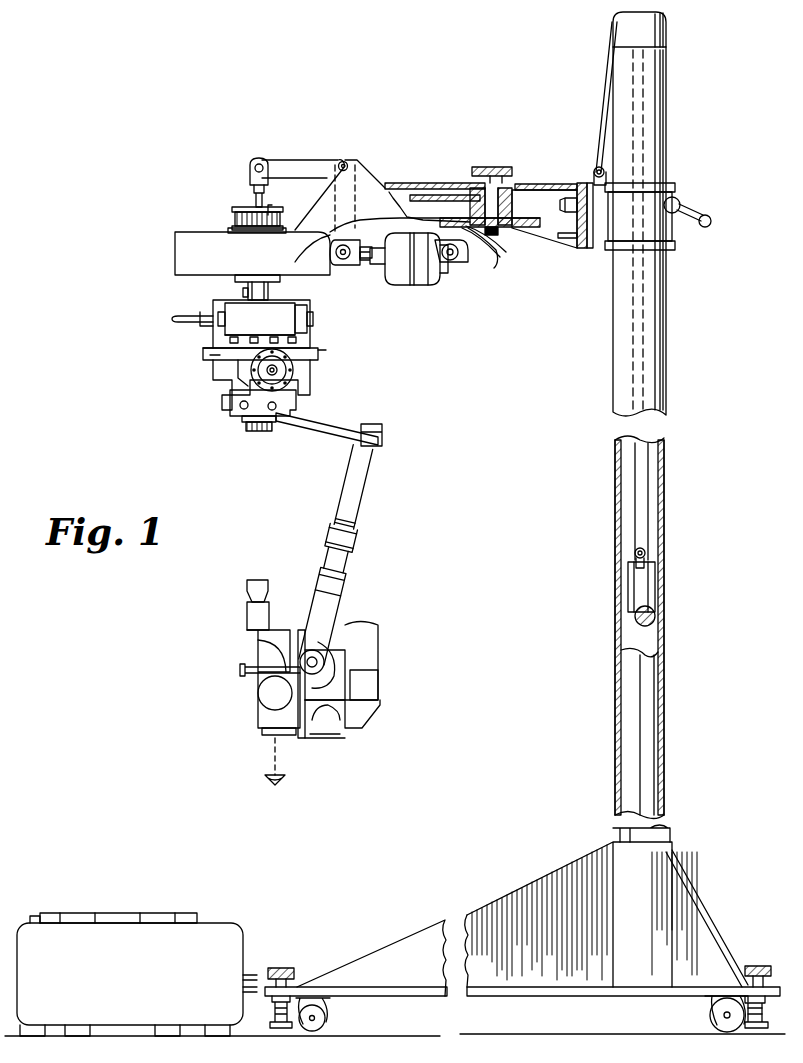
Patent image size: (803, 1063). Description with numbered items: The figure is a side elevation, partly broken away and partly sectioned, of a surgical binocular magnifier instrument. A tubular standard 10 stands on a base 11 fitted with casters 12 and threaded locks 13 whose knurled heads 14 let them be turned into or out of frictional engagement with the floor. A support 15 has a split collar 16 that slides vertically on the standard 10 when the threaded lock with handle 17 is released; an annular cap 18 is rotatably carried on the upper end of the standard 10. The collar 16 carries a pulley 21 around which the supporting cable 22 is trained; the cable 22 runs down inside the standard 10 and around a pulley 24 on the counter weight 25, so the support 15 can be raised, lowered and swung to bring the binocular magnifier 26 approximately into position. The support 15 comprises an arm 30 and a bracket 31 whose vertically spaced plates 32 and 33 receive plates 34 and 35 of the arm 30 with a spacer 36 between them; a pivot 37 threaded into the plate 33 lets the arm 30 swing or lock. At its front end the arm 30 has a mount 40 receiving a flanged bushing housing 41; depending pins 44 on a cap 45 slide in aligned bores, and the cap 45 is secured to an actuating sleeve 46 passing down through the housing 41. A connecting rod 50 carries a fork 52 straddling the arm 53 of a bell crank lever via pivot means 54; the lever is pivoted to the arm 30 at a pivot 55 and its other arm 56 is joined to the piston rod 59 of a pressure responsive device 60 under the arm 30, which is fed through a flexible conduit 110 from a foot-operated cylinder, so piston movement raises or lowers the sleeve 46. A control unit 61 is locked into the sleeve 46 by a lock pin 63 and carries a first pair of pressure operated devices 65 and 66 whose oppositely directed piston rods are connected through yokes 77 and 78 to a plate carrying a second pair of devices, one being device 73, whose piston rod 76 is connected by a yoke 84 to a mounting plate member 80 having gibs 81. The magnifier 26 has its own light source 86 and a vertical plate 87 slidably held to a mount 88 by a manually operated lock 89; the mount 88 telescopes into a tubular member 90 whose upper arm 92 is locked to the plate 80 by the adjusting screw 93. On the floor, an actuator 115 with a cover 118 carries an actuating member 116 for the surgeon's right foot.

The tubular standard 10 is at (664, 545).
The base 11 is at (518, 895).
The casters 12 is at (345, 1030).
The threaded locks 13 is at (290, 1030).
The knurled heads 14 is at (288, 962).
The support 15 is at (410, 168).
The split collar 16 is at (672, 232).
The handle 17 is at (692, 205).
The annular cap 18 is at (670, 30).
The pulley 21 is at (596, 168).
The supporting cable 22 is at (605, 82).
The pulley 24 is at (630, 563).
The counter weight 25 is at (655, 590).
The binocular magnifier 26 is at (236, 664).
The arm 30 is at (425, 185).
The bracket 31 is at (545, 184).
The plate 32 is at (530, 190).
The plate 33 is at (545, 235).
The plate 34 is at (455, 195).
The plate 35 is at (462, 262).
The spacer 36 is at (505, 255).
The pivot 37 is at (497, 165).
The mount 40 is at (200, 253).
The flanged bushing housing 41 is at (228, 230).
The depending pins 44 is at (282, 182).
The cap 45 is at (233, 209).
The actuating sleeve 46 is at (268, 292).
The connecting rod 50 is at (255, 192).
The fork 52 is at (255, 168).
The arm 53 is at (308, 160).
The pivot means 54 is at (262, 160).
The pivot 55 is at (348, 162).
The arm 56 is at (340, 265).
The piston rod 59 is at (368, 260).
The pressure responsive device 60 is at (400, 287).
The control unit 61 is at (196, 366).
The lock pin 63 is at (243, 292).
The pressure operated device 65 is at (200, 312).
The pressure operated device 66 is at (312, 312).
The pressure responsive device 73 is at (294, 380).
The piston rod 76 is at (238, 382).
The yoke 77 is at (318, 352).
The yoke 78 is at (203, 352).
The mounting plate member 80 is at (228, 412).
The gibs 81 is at (298, 404).
The yoke 84 is at (252, 425).
The light source 86 is at (370, 653).
The vertical plate 87 is at (310, 735).
The mount 88 is at (344, 621).
The manually operated lock 89 is at (340, 720).
The tubular member 90 is at (367, 513).
The arm 92 is at (338, 428).
The adjusting screw 93 is at (268, 432).
The flexible conduit 110 is at (488, 270).
The actuator 115 is at (247, 942).
The actuating member 116 is at (143, 913).
The cover 118 is at (112, 1005).